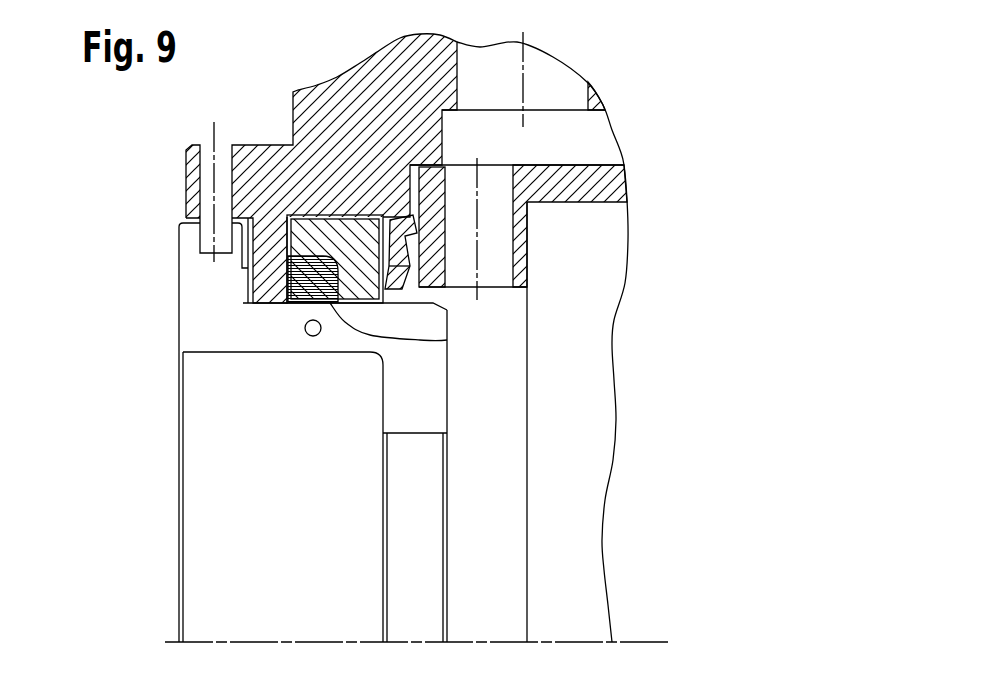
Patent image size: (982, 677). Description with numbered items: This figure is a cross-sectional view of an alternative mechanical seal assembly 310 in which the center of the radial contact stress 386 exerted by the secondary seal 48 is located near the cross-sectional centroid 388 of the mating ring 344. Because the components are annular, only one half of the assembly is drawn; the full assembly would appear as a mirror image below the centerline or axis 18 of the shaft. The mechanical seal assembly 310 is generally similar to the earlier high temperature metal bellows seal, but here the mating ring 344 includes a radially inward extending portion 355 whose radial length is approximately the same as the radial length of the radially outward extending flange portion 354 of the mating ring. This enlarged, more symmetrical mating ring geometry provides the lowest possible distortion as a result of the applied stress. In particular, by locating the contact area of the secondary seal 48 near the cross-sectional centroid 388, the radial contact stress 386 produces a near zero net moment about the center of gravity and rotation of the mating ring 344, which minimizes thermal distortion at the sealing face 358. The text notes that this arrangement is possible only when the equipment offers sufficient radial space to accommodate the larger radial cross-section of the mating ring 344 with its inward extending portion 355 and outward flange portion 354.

The mechanical seal assembly 310 is at (575, 38).
The secondary seal 48 is at (311, 267).
The sealing face 358 is at (188, 278).
The radially outward extending flange portion 354 is at (203, 310).
The mating ring 344 is at (218, 328).
The cross-sectional centroid 388 is at (307, 334).
The radial contact stress 386 is at (447, 340).
The radially inward extending portion 355 is at (440, 397).
The centerline or axis 18 is at (625, 642).